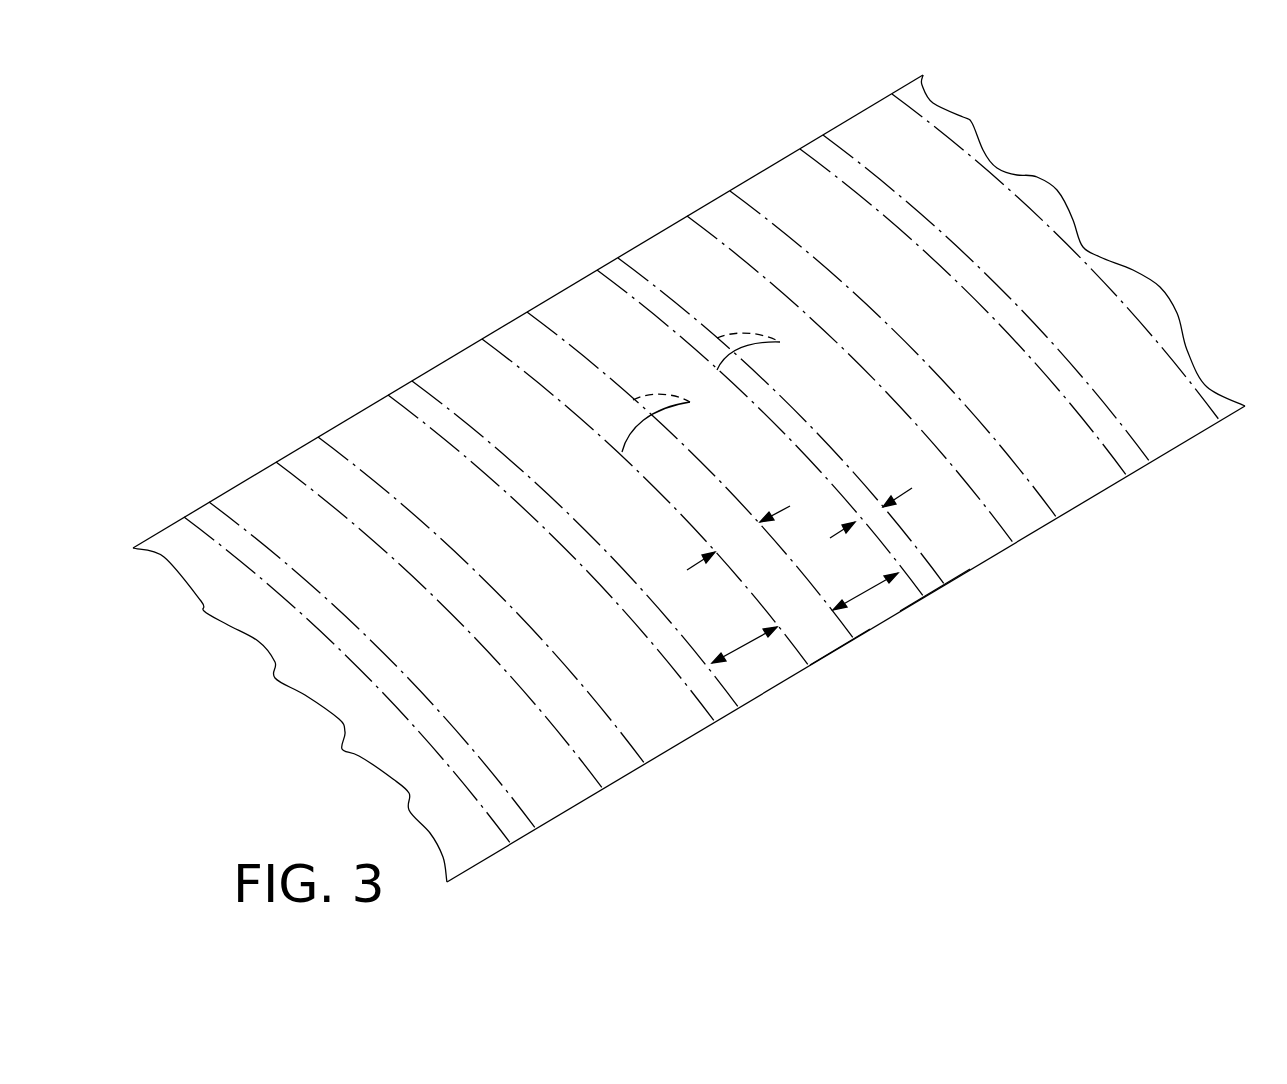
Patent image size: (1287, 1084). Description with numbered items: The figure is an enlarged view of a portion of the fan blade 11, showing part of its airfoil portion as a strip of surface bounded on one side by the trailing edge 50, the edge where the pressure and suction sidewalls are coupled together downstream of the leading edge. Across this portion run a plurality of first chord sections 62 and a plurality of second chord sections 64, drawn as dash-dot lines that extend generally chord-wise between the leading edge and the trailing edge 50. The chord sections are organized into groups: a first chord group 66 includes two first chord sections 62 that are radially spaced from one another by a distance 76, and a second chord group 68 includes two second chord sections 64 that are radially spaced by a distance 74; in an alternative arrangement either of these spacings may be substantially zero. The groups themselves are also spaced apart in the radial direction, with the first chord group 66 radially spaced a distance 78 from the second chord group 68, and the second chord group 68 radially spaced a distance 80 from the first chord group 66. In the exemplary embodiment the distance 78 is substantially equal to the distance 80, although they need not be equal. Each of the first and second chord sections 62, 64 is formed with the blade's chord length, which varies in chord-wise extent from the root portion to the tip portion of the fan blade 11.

The fan blade 11 is at (1060, 790).
The trailing edge 50 is at (689, 478).
The first chord sections 62 is at (780, 342).
The second chord sections 64 is at (690, 402).
The first chord group 66 is at (938, 592).
The second chord group 68 is at (838, 650).
The distance 74 is at (687, 567).
The distance 76 is at (912, 490).
The distance 78 is at (868, 591).
The distance 80 is at (744, 645).